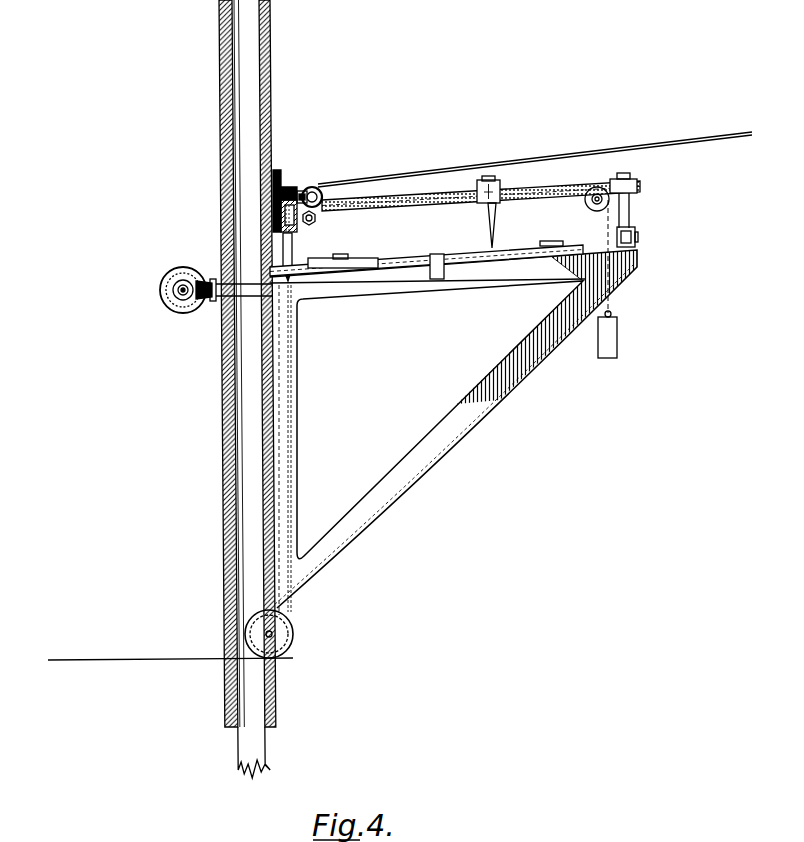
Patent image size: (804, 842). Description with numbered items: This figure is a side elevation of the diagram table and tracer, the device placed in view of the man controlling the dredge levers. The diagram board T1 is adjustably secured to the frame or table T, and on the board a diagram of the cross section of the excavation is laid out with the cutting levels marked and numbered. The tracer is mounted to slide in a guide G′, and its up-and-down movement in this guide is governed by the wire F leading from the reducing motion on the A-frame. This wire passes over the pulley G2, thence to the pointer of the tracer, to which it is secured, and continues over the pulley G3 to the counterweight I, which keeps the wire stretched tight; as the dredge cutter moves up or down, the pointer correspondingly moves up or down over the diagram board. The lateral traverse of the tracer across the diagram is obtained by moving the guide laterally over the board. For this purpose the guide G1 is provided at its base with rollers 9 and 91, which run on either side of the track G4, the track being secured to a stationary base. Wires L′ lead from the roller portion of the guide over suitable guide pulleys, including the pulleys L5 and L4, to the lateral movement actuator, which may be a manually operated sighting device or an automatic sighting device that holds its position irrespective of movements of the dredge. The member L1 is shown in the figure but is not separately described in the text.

The wires L' is at (170, 671).
The guide pulley L5 is at (283, 259).
The roller 91 is at (293, 246).
The track G4 is at (303, 190).
The pulley G2 is at (314, 189).
The roller 9 is at (316, 220).
The wire F is at (587, 158).
The guide G1 is at (481, 210).
The guide G' is at (501, 212).
The pulley G3 is at (603, 188).
The counterweight I is at (617, 346).
The frame or table T is at (453, 432).
The diagram board T1 is at (410, 263).
The opening L1 is at (292, 470).
The guide pulley L4 is at (296, 642).